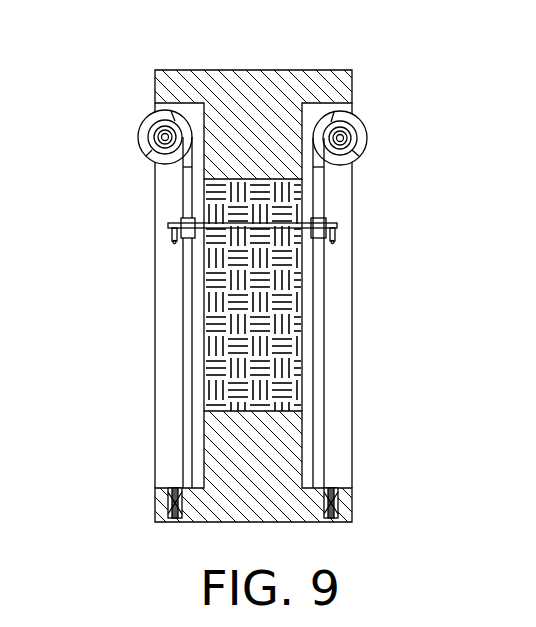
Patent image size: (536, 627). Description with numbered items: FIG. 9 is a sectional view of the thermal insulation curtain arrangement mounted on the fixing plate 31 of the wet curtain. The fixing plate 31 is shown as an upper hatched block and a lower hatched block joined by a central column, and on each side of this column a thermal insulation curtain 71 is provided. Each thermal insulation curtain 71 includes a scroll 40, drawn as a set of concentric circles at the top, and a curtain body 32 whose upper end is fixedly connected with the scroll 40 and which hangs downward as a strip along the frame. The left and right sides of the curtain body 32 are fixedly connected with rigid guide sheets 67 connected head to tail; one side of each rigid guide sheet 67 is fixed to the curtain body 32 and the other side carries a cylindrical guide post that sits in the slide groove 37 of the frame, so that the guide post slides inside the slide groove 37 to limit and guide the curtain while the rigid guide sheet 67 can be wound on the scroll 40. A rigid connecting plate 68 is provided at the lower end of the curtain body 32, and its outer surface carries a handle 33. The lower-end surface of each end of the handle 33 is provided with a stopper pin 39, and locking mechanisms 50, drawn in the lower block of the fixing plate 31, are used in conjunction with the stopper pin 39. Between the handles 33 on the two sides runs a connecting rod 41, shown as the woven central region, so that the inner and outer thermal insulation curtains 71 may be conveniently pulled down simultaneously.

The fixing plate 31 is at (155, 73).
The curtain body 32 is at (183, 180).
The handle 33 is at (172, 222).
The slide groove 37 is at (187, 305).
The stopper pin 39 is at (174, 239).
The scroll 40 is at (166, 132).
The connecting rod 41 is at (247, 227).
The locking mechanism 50 is at (172, 508).
The rigid guide sheet 67 is at (320, 198).
The rigid connecting plate 68 is at (320, 230).
The thermal insulation curtain 71 is at (143, 135).